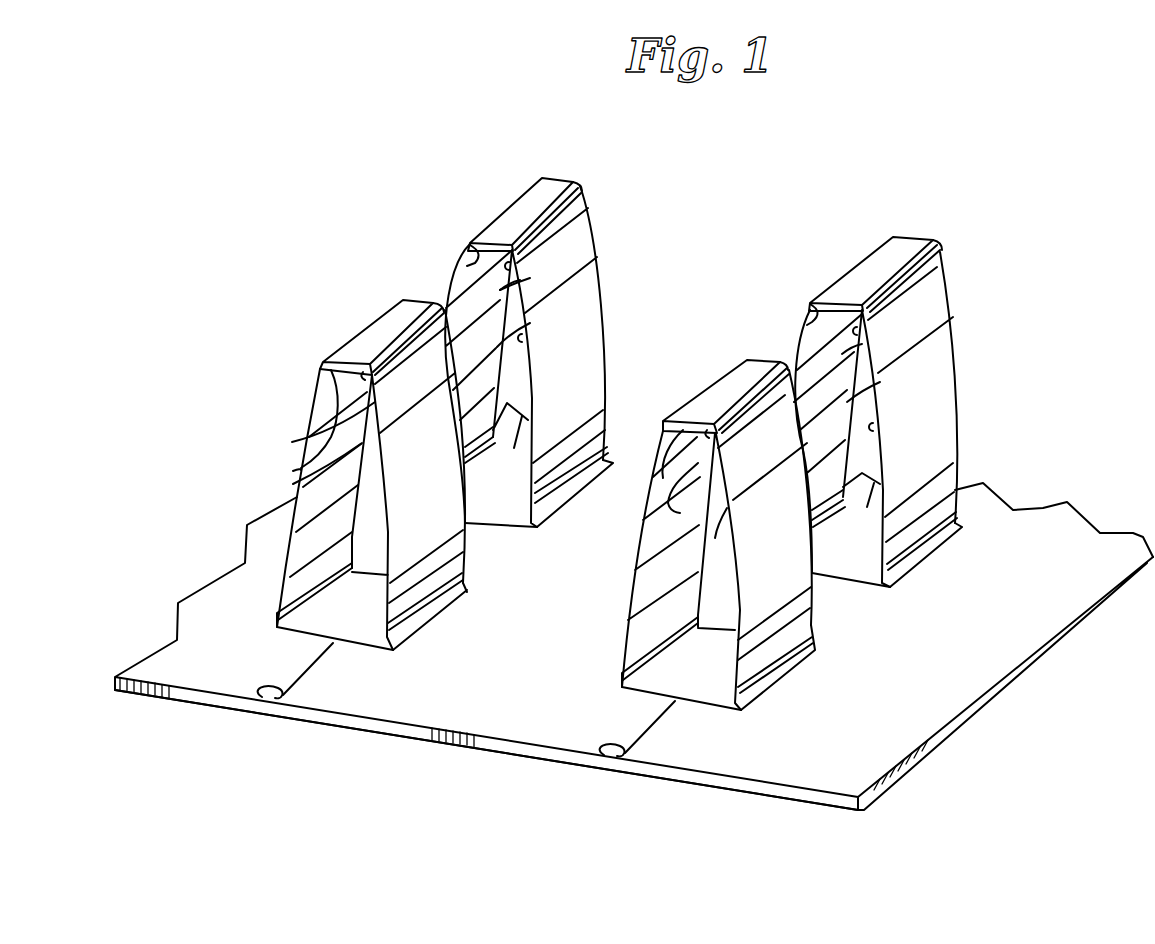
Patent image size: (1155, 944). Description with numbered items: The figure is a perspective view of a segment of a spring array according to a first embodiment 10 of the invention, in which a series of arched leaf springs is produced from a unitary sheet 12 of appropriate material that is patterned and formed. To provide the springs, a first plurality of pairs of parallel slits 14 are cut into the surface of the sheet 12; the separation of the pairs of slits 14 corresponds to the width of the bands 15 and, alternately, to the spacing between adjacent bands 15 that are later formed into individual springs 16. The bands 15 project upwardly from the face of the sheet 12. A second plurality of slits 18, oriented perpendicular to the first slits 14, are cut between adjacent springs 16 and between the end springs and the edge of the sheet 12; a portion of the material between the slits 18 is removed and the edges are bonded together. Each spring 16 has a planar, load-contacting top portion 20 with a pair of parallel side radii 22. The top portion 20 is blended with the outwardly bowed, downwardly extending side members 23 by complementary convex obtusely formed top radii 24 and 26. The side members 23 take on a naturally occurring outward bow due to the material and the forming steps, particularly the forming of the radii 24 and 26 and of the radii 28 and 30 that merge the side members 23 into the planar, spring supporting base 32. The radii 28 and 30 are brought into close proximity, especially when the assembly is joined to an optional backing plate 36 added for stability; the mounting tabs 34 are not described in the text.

The first embodiment 10 is at (634, 501).
The unitary sheet 12 is at (866, 722).
The parallel slits 14 is at (365, 572).
The bands 15 is at (413, 494).
The springs 16 is at (296, 366).
The second plurality of slits 18 is at (257, 690).
The top portion 20 is at (367, 345).
The side radii 22 is at (378, 317).
The side members 23 is at (292, 442).
The top radius 24 is at (327, 386).
The top radius 26 is at (293, 471).
The radius 28 is at (277, 627).
The radius 30 is at (395, 640).
The spring supporting base 32 is at (1040, 537).
The mounting tab 34 is at (277, 690).
The backing plate 36 is at (828, 800).